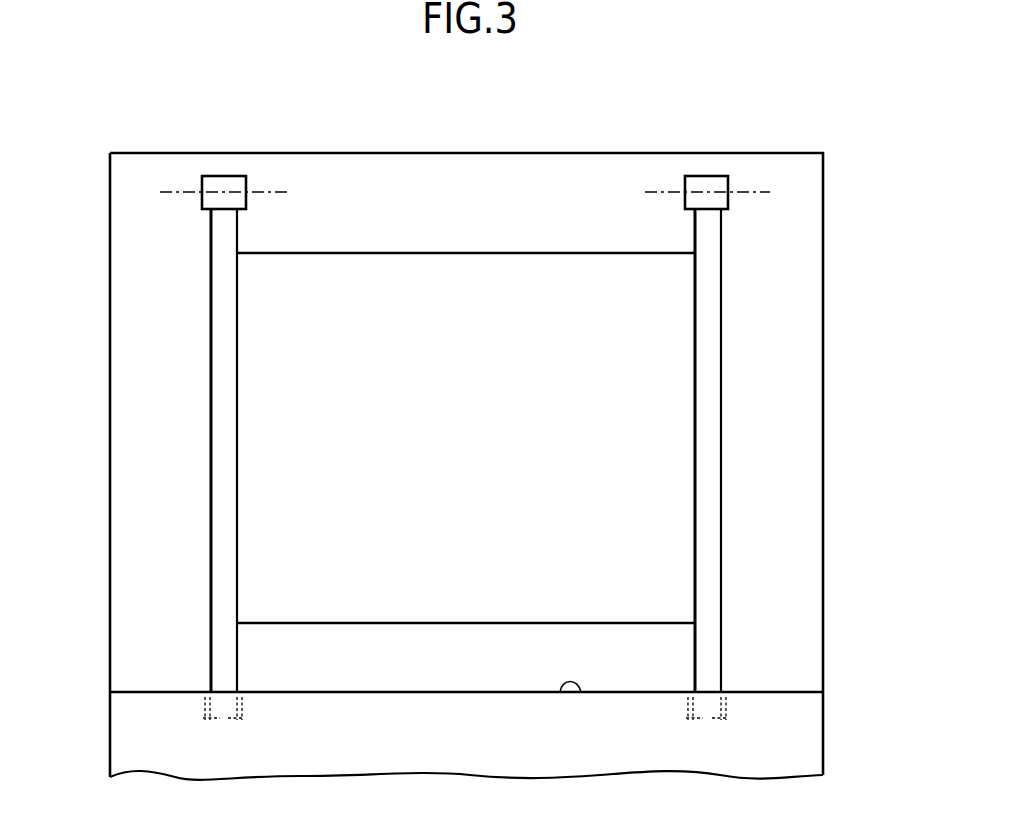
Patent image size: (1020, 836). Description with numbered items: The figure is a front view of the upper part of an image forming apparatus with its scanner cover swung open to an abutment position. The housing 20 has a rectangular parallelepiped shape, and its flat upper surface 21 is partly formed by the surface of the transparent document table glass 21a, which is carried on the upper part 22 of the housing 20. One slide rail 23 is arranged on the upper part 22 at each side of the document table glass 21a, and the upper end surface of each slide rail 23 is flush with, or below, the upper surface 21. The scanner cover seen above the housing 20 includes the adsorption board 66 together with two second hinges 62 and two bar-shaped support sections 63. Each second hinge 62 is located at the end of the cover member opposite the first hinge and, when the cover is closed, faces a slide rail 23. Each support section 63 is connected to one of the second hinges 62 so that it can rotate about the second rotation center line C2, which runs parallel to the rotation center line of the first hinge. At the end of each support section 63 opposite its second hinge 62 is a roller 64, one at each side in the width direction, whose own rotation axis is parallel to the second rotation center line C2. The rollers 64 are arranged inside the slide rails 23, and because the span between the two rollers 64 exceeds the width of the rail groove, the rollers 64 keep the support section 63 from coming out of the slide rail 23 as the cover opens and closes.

The housing 20 is at (810, 733).
The upper surface 21 is at (800, 692).
The document table glass 21a is at (581, 692).
The upper part 22 is at (782, 708).
The slide rail 23 is at (239, 718).
The second hinge 62 is at (222, 178).
The support section 63 is at (222, 410).
The roller 64 is at (220, 712).
The adsorption board 66 is at (678, 323).
The second rotation center line C2 is at (276, 190).